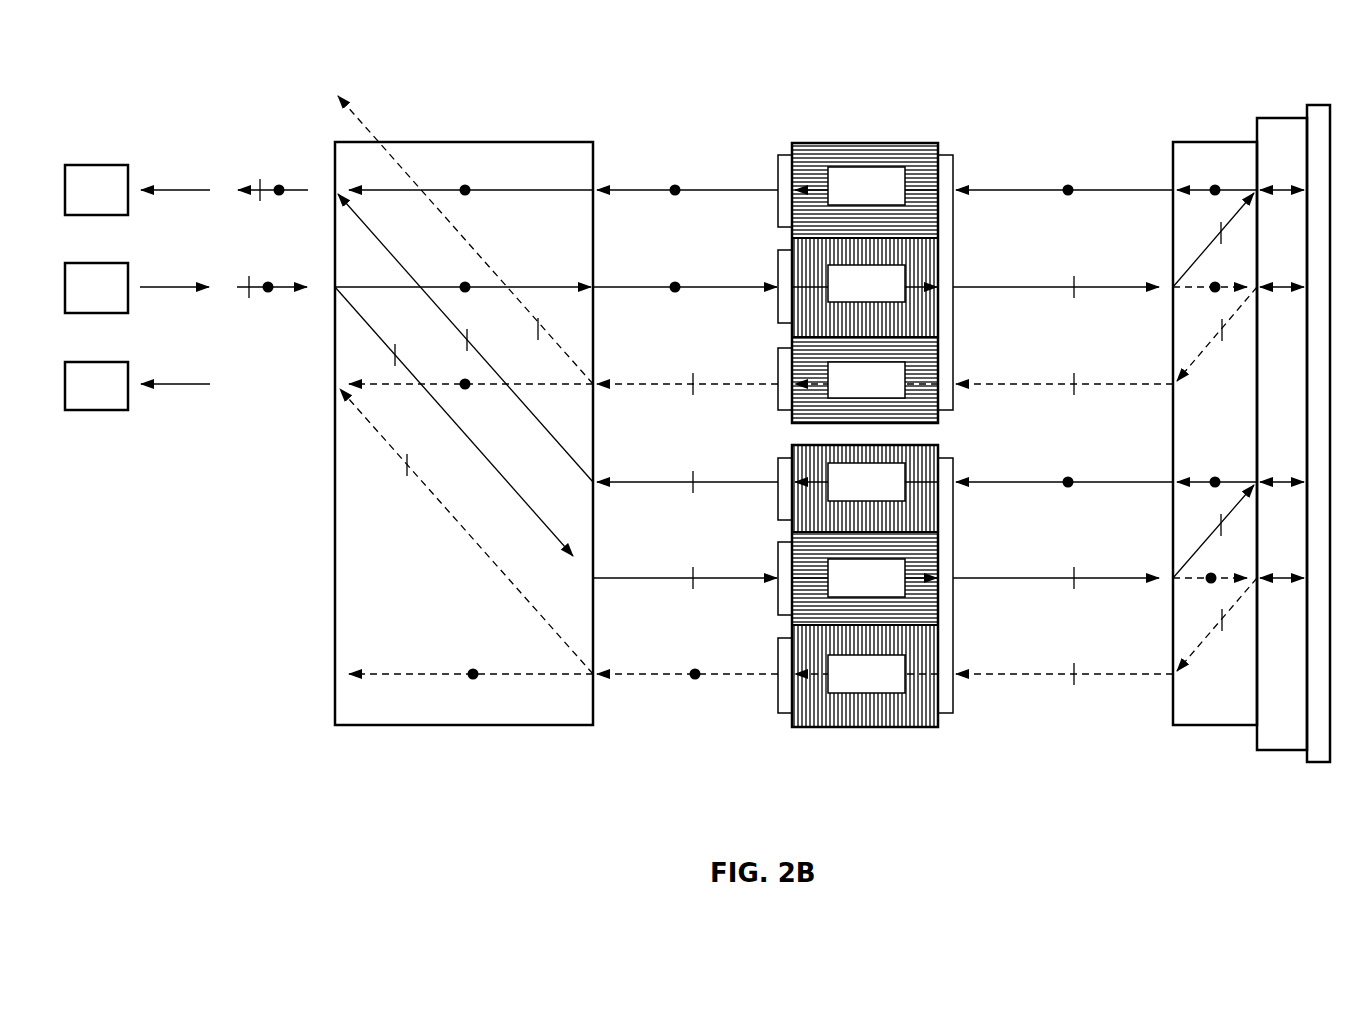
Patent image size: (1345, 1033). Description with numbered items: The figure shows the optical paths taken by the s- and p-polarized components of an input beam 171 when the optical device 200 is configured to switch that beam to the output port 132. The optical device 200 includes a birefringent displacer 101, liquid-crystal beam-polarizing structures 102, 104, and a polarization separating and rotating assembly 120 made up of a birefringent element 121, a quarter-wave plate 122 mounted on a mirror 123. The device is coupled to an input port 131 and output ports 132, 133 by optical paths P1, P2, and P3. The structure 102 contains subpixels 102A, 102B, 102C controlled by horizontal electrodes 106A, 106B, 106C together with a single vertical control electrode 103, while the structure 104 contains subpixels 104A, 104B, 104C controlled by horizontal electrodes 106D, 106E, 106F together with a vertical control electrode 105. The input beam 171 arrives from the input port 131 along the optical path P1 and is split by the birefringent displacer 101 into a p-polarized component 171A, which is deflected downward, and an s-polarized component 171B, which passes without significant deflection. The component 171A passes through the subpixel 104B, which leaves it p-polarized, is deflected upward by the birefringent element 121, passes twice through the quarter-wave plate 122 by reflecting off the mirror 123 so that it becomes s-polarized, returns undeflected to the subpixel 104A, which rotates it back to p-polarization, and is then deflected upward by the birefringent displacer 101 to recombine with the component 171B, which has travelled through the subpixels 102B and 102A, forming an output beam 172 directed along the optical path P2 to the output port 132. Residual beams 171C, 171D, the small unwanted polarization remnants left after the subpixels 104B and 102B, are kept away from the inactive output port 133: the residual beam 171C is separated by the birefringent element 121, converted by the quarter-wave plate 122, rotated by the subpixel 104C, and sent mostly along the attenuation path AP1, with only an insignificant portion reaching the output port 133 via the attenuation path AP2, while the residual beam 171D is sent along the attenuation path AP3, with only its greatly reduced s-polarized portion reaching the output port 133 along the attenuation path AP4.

The optical device 200 is at (300, 112).
The birefringent displacer 101 is at (452, 142).
The LC beam-polarizing structure 102 is at (842, 143).
The LC subpixel 102A is at (842, 196).
The LC subpixel 102B is at (842, 294).
The LC subpixel 102C is at (842, 390).
The vertical control electrode 103 is at (953, 177).
The LC beam-polarizing structure 104 is at (858, 728).
The LC subpixel 104A is at (842, 492).
The LC subpixel 104B is at (842, 588).
The LC subpixel 104C is at (842, 684).
The vertical control electrode 105 is at (953, 700).
The horizontal electrode 106A is at (778, 175).
The horizontal electrode 106B is at (778, 272).
The horizontal electrode 106C is at (778, 368).
The horizontal electrode 106D is at (778, 470).
The horizontal electrode 106E is at (778, 562).
The horizontal electrode 106F is at (778, 665).
The polarization separating and rotating assembly 120 is at (1177, 751).
The birefringent element 121 is at (1190, 142).
The quarter-wave plate 122 is at (1290, 118).
The mirror 123 is at (1320, 765).
The input port 131 is at (78, 299).
The output port 132 is at (78, 201).
The output port 133 is at (78, 397).
The input beam 171 is at (283, 292).
The component 171A is at (538, 512).
The component 171B is at (572, 285).
The residual beam 171C is at (745, 680).
The residual beam 171D is at (1213, 293).
The output beam 172 is at (292, 197).
The optical path P1 is at (168, 289).
The optical path P2 is at (168, 193).
The optical path P3 is at (180, 386).
The attenuation path AP1 is at (432, 672).
The attenuation path AP2 is at (482, 548).
The attenuation path AP3 is at (368, 128).
The attenuation path AP4 is at (440, 382).